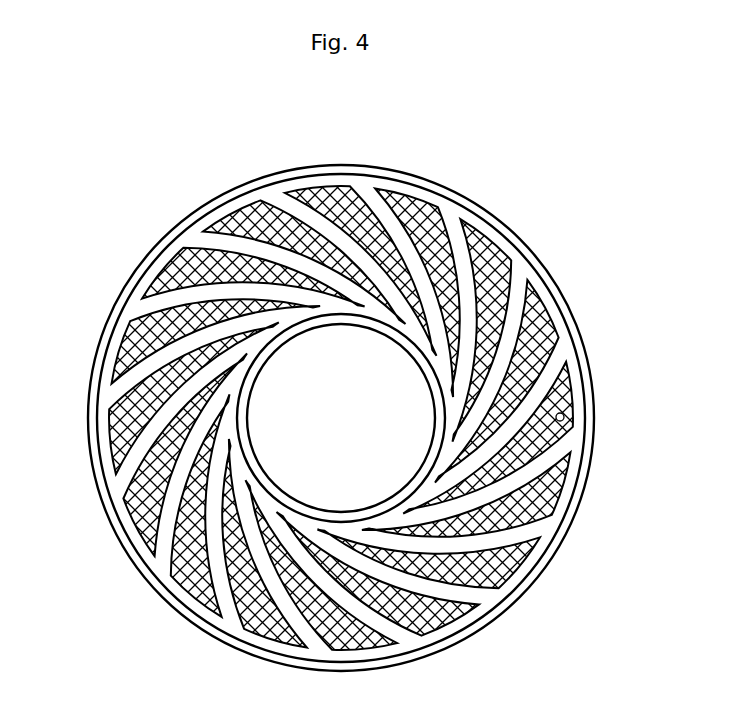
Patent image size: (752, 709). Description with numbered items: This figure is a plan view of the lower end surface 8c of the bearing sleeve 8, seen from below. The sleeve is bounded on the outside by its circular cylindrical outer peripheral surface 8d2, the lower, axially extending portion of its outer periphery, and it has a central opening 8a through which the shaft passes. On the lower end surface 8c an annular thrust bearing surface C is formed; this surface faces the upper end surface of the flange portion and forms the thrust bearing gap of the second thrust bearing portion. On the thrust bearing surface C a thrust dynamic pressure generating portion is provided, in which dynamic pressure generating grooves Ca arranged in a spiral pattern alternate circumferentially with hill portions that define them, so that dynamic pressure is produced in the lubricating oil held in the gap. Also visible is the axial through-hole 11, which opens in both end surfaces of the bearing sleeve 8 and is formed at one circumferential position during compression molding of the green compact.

The bearing sleeve 8 is at (565, 230).
The central opening 8a is at (297, 346).
The lower end surface 8c is at (120, 400).
The circular cylindrical outer peripheral surface 8d2 is at (580, 318).
The axial through-hole 11 is at (565, 419).
The thrust bearing surface C is at (179, 571).
The dynamic pressure generating grooves Ca is at (450, 592).